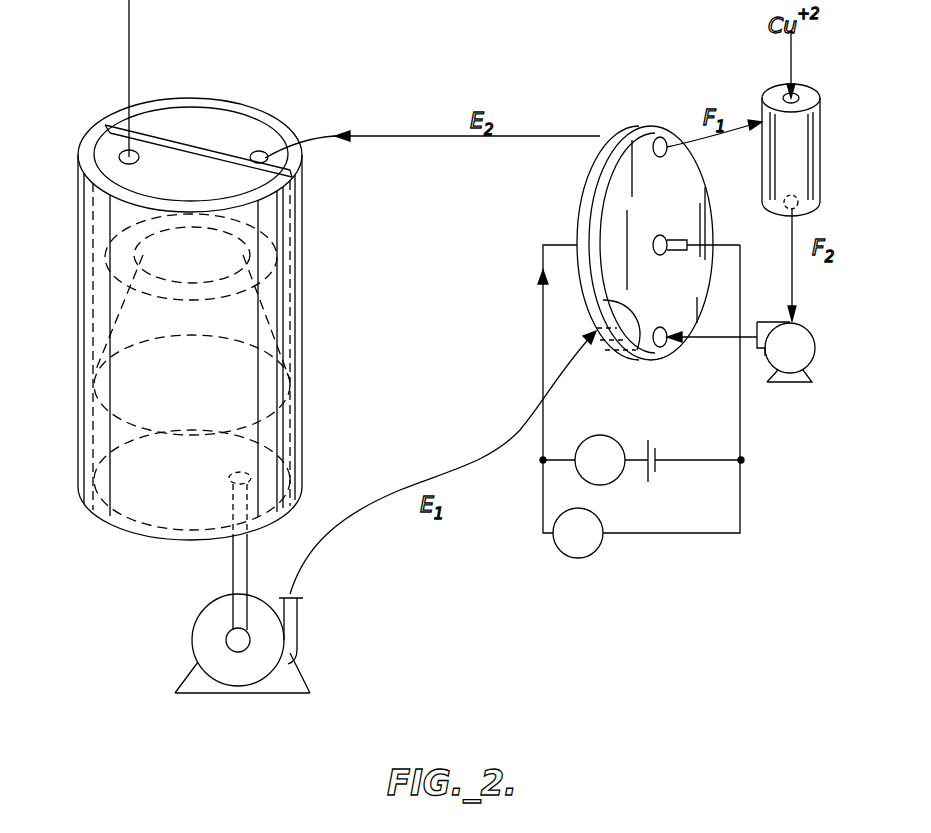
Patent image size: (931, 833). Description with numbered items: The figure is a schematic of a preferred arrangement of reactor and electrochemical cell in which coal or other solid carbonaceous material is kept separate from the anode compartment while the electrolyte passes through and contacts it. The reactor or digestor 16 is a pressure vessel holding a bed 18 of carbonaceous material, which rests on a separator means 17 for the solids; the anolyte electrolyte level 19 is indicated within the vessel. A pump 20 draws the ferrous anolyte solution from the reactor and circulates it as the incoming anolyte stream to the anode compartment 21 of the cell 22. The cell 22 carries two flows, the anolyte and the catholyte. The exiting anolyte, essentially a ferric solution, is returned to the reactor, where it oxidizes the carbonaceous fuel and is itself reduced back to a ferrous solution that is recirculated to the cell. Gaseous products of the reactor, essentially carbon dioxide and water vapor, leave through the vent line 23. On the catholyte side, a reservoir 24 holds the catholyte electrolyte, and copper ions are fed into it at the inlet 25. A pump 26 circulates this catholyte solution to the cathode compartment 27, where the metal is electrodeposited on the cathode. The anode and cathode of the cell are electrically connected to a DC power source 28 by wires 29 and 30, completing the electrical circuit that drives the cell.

The reactor or digestor 16 is at (115, 530).
The separator means 17 is at (290, 389).
The bed 18 is at (242, 322).
The anolyte electrolyte level 19 is at (277, 252).
The pump 20 is at (245, 696).
The anode compartment 21 is at (590, 190).
The cell 22 is at (648, 192).
The gas vent line 23 is at (130, 16).
The reservoir 24 is at (808, 185).
The copper ion feed 25 is at (800, 96).
The pump 26 is at (815, 338).
The cathode compartment 27 is at (637, 352).
The DC power source 28 is at (657, 468).
The wire 29 is at (543, 346).
The wire 30 is at (741, 400).